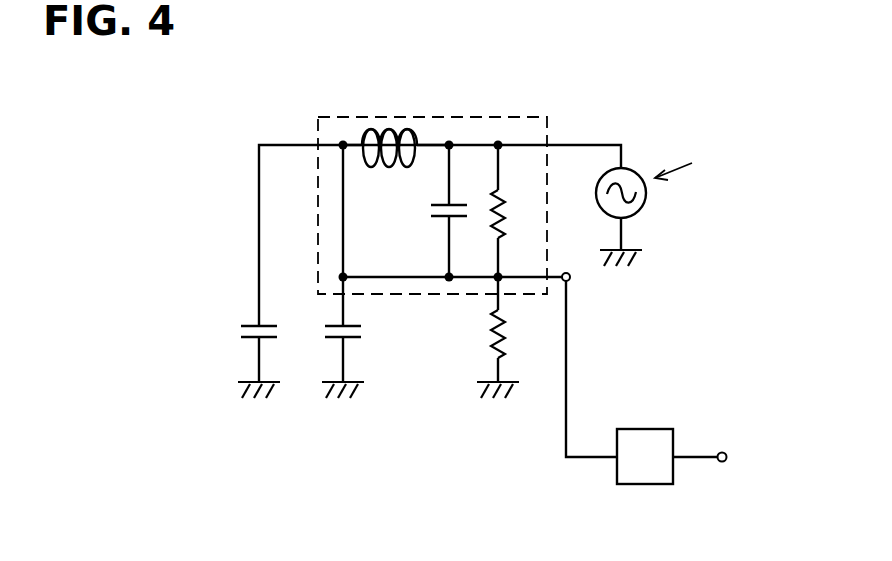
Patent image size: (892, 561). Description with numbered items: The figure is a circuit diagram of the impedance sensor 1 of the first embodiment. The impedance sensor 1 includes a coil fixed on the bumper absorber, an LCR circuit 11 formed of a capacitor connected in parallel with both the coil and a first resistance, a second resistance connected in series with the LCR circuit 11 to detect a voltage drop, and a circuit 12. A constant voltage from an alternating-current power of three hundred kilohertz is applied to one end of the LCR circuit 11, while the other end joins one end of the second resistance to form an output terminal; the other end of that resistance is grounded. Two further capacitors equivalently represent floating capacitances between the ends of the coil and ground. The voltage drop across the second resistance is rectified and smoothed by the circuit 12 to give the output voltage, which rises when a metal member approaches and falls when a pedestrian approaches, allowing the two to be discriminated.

The impedance sensor 1 is at (227, 146).
The LCR circuit 11 is at (518, 110).
The circuit 12 is at (657, 470).